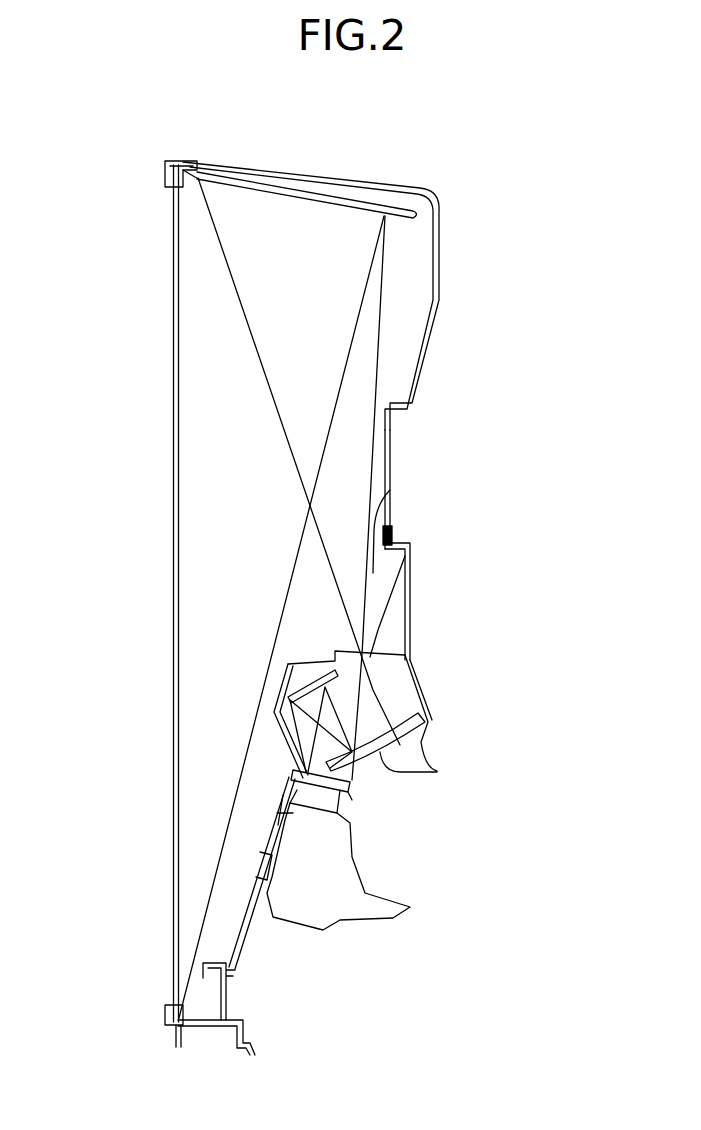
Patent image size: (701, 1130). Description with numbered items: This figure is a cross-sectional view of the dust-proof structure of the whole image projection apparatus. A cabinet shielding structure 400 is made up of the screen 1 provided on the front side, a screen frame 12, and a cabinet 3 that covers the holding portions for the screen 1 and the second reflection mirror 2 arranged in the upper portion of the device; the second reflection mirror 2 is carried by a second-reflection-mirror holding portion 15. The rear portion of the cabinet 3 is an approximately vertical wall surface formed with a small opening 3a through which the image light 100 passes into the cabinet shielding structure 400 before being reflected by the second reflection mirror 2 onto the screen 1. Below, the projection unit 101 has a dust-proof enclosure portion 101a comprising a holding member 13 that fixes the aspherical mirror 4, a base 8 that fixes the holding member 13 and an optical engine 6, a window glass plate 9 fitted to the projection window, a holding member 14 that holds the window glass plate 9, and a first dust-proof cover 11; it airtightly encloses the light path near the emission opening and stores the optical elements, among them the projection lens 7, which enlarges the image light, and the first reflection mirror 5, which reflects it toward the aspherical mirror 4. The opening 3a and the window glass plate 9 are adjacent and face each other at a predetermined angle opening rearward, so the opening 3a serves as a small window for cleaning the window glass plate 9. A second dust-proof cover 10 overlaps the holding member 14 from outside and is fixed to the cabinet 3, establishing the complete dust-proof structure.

The screen 1 is at (173, 523).
The second reflection mirror 2 is at (307, 185).
The cabinet 3 is at (413, 405).
The opening 3a is at (390, 490).
The aspherical mirror 4 is at (408, 742).
The first reflection mirror 5 is at (288, 665).
The optical engine 6 is at (347, 887).
The projection lens 7 is at (297, 776).
The base 8 is at (274, 828).
The window glass plate 9 is at (405, 556).
The second dust-proof cover 10 is at (410, 597).
The first dust-proof cover 11 is at (353, 800).
The screen frame 12 is at (170, 163).
The holding member 13 is at (400, 772).
The holding member 14 is at (410, 675).
The second-reflection-mirror holding portion 15 is at (177, 1030).
The image light 100 is at (253, 325).
The projection unit 101 is at (381, 942).
The dust-proof enclosure portion 101a is at (525, 652).
The cabinet shielding structure 400 is at (440, 327).